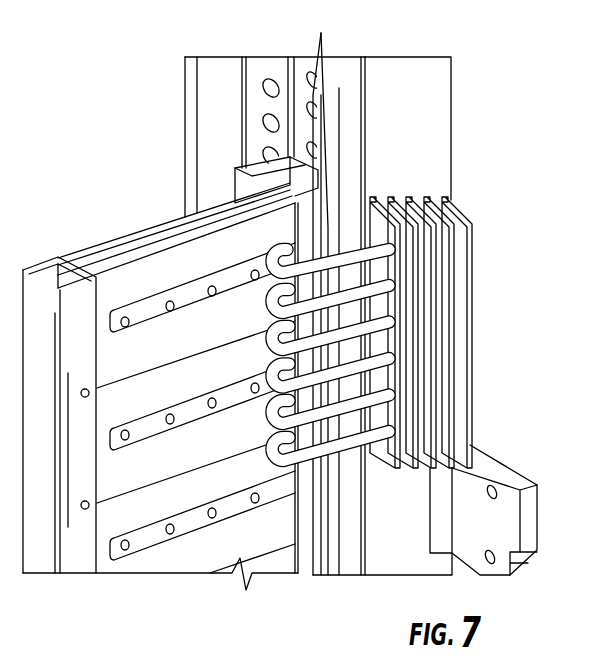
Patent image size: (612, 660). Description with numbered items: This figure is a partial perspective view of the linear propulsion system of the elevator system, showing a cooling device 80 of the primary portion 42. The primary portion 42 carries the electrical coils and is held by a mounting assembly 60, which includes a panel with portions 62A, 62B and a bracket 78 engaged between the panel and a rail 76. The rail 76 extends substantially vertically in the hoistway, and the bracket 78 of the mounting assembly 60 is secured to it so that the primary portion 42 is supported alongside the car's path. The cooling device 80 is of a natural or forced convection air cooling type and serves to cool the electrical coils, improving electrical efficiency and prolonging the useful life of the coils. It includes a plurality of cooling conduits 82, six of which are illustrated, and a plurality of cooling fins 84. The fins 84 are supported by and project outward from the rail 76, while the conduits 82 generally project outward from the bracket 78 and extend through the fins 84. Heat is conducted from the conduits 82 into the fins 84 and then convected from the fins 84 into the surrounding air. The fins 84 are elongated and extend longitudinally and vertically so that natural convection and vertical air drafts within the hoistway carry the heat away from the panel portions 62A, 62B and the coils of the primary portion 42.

The primary portion 42 is at (150, 234).
The mounting assembly 60 is at (262, 563).
The panel 62A is at (207, 243).
The channel member 62B is at (80, 253).
The rail 76 is at (428, 57).
The bracket 78 is at (312, 565).
The cooling device 80 is at (473, 370).
The cooling conduits 82 is at (360, 368).
The cooling fins 84 is at (424, 258).